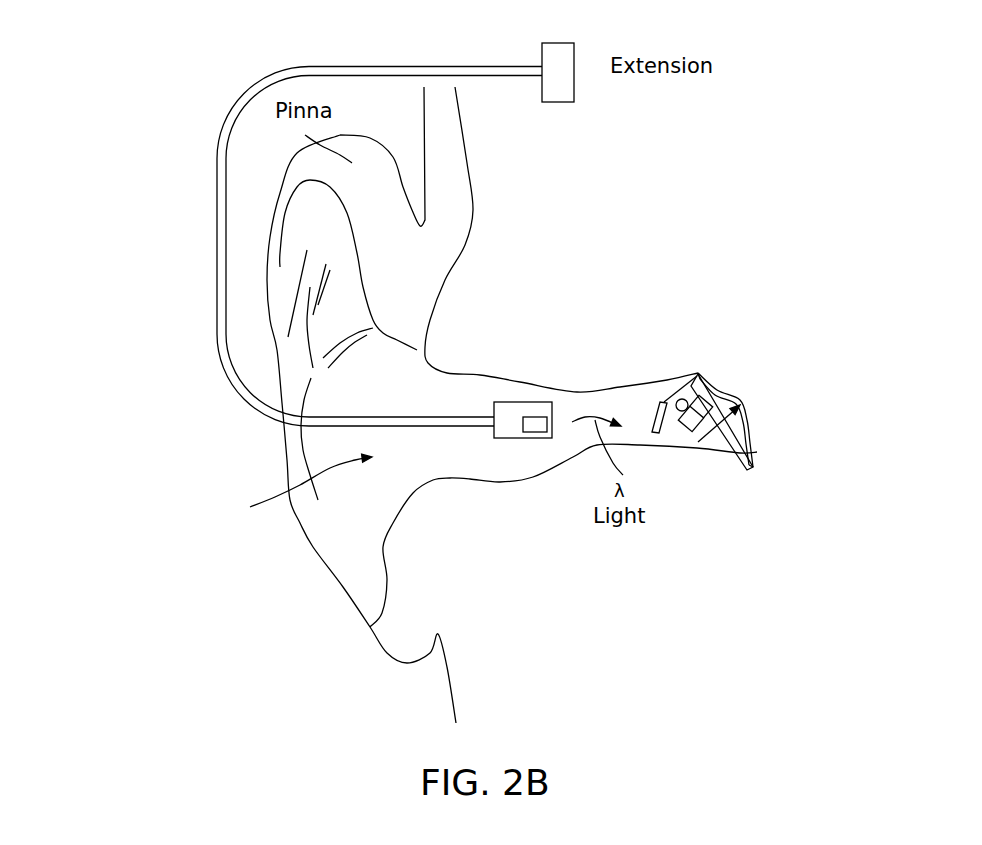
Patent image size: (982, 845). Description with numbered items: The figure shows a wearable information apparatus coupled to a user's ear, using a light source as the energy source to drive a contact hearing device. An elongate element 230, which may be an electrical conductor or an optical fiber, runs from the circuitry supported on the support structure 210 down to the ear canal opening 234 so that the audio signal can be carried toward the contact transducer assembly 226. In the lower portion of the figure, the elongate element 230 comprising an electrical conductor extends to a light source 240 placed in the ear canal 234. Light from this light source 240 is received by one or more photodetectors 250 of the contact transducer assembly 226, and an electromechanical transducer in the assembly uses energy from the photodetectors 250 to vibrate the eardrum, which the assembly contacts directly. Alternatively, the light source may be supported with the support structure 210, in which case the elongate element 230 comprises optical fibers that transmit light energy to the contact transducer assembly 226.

The elongate element 230 is at (218, 305).
The ear canal opening 234 is at (256, 518).
The light source 240 is at (530, 432).
The photodetector 250 is at (660, 402).
The contact transducer assembly 226 is at (717, 390).
The support structure 210 is at (757, 452).